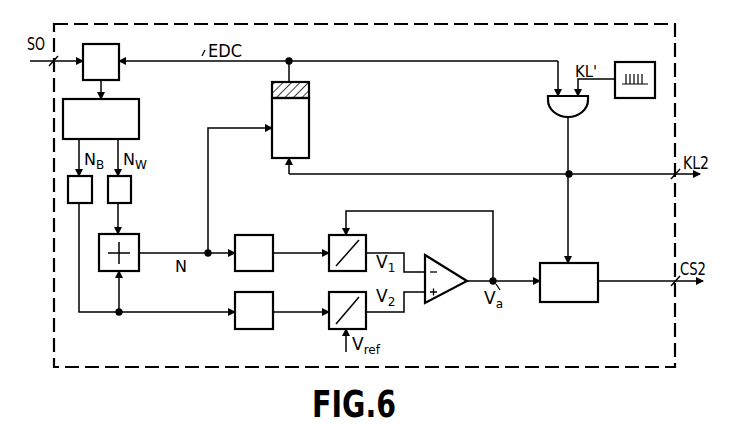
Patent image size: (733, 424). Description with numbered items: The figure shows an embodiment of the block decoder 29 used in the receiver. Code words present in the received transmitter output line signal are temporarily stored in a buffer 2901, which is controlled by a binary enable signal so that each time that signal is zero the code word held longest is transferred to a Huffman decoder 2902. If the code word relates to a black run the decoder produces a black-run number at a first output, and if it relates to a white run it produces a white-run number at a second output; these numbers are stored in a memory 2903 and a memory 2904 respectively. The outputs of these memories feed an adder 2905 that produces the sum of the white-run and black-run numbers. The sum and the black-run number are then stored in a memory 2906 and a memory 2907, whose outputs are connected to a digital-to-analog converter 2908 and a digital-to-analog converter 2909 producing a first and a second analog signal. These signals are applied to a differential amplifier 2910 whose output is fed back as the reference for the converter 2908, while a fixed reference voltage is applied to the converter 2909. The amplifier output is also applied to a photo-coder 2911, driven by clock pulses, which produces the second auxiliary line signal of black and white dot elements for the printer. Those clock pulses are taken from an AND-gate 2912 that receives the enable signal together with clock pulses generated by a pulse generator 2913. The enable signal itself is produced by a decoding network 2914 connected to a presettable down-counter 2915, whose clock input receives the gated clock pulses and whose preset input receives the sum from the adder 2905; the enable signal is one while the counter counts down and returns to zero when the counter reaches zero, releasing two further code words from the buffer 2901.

The block decoder 29 is at (84, 24).
The buffer 2901 is at (108, 44).
The Huffman decoder 2902 is at (139, 117).
The memory 2903 is at (88, 206).
The memory 2904 is at (131, 192).
The adder 2905 is at (128, 234).
The memory 2906 is at (251, 235).
The memory 2907 is at (245, 292).
The digital-to-analog converter 2908 is at (366, 246).
The digital-to-analog converter 2909 is at (331, 330).
The differential amplifier 2910 is at (459, 290).
The photo-coder 2911 is at (589, 302).
The AND-gate 2912 is at (558, 112).
The pulse generator 2913 is at (644, 62).
The decoding network 2914 is at (310, 90).
The presettable down-counter 2915 is at (310, 128).